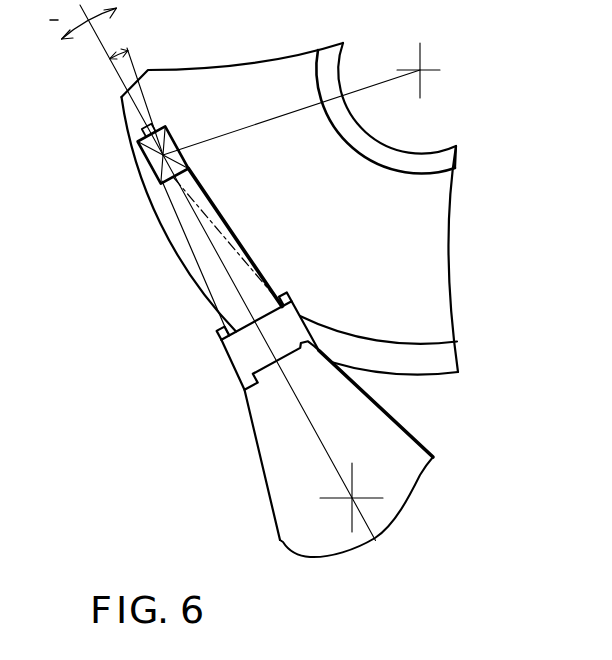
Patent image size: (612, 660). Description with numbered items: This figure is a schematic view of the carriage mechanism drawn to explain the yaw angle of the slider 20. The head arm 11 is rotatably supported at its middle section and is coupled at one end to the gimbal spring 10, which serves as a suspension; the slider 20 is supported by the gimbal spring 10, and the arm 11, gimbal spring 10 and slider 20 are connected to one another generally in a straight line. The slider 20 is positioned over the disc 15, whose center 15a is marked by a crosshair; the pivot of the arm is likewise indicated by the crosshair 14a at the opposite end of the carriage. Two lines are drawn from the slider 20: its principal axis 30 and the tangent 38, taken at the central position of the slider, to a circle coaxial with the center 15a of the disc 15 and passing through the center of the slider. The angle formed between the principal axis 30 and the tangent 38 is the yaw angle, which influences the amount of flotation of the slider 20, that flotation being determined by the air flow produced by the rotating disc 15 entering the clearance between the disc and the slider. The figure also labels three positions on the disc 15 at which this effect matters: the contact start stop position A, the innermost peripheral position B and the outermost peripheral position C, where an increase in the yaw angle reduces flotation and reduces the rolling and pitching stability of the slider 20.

The gimbal spring 10 is at (222, 303).
The head arm 11 is at (272, 472).
The axis center 14a is at (352, 498).
The disc 15 is at (449, 277).
The center of disc 15a is at (421, 70).
The slider 20 is at (143, 167).
The principal axis of slider 30 is at (118, 73).
The tangent 38 is at (131, 60).
The CSS (contact start stop) position A is at (432, 160).
The innermost peripheral position B is at (407, 176).
The outermost peripheral position C is at (433, 348).